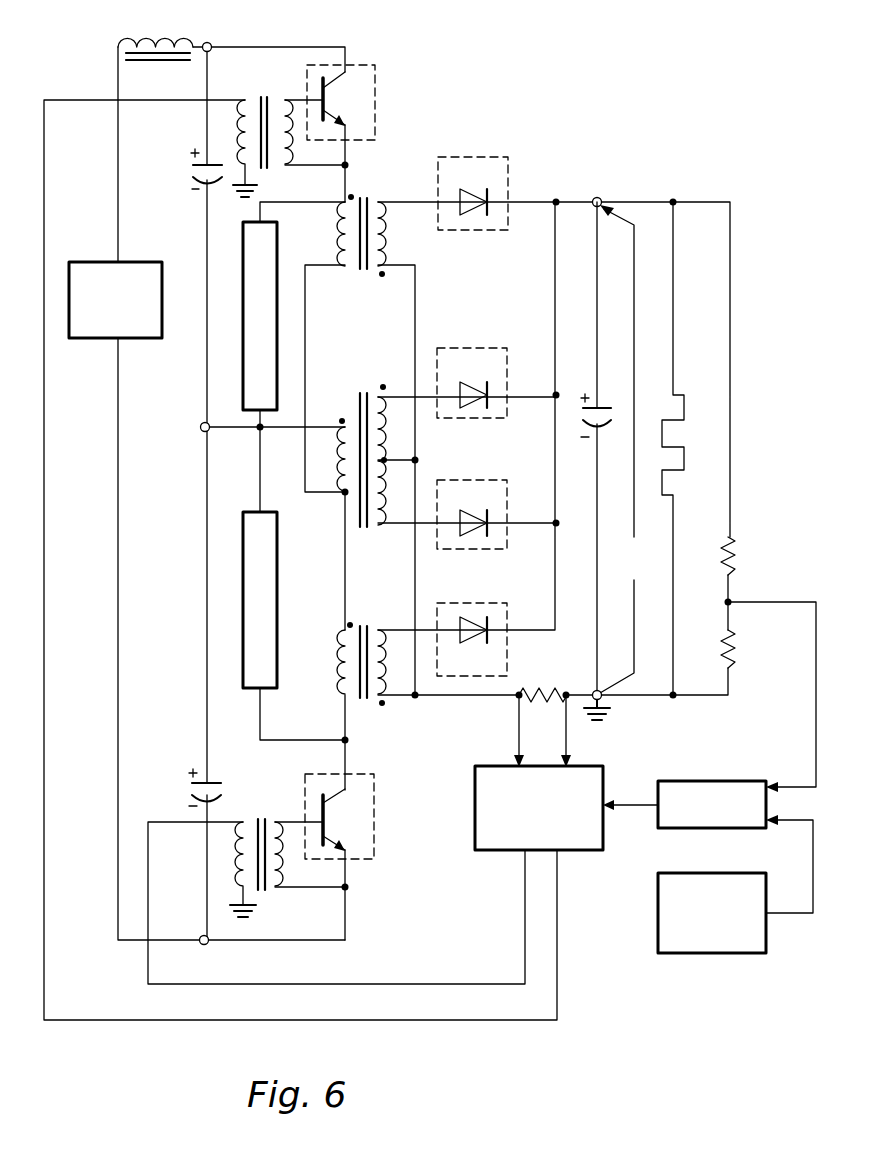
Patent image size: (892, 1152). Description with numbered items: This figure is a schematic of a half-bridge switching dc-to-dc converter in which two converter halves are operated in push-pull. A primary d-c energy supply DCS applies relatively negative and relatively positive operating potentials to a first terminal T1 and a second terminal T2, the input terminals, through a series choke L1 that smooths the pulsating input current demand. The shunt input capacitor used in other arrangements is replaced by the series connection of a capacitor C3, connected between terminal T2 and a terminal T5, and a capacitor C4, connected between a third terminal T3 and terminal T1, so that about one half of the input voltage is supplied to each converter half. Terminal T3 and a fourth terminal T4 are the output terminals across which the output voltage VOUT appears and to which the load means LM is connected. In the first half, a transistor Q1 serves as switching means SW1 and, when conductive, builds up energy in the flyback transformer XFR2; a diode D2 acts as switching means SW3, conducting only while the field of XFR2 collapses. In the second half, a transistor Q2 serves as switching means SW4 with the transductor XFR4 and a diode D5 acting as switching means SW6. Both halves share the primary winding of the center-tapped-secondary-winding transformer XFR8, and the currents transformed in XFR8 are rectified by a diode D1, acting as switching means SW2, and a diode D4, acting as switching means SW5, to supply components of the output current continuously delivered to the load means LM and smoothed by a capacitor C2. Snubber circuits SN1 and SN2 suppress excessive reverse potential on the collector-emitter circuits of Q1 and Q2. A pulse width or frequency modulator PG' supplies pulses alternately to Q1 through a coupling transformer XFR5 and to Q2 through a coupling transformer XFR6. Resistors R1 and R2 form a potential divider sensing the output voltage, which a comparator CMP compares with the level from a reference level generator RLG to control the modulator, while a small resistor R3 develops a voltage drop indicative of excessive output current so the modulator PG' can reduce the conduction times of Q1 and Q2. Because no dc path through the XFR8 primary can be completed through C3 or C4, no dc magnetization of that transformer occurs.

The series choke L1 is at (158, 46).
The second terminal T2 is at (208, 46).
The coupling transformer XFR5 is at (263, 132).
The transistor Q1 is at (360, 109).
The switching means SW1 is at (363, 102).
The capacitor C3 is at (188, 169).
The snubber circuit SN1 is at (243, 219).
The flyback transformer XFR2 is at (333, 244).
The diode D2 is at (465, 193).
The third switching means SW3 is at (487, 208).
The fourth terminal T4 is at (600, 200).
The primary d-c energy supply DCS is at (127, 259).
The terminal T5 is at (202, 422).
The snubber circuit SN2 is at (246, 510).
The center-tapped-secondary-winding transformer XFR8 is at (335, 534).
The diode D1 is at (467, 383).
The switching means SW2 is at (487, 396).
The diode D4 is at (467, 511).
The switching means SW5 is at (489, 525).
The transductor XFR4 is at (335, 680).
The diode D5 is at (470, 654).
The switching means SW6 is at (492, 643).
The capacitor C2 is at (601, 404).
The output voltage VOUT is at (628, 449).
The load means LM is at (684, 435).
The resistor R1 is at (735, 558).
The resistor R2 is at (735, 657).
The resistor R3 is at (551, 687).
The third terminal T3 is at (608, 712).
The pulse width or frequency modulator PG' is at (534, 794).
The comparator CMP is at (725, 780).
The reference level generator RLG is at (658, 874).
The capacitor C4 is at (186, 787).
The coupling transformer XFR6 is at (256, 852).
The transistor Q2 is at (358, 834).
The switching means SW4 is at (362, 816).
The first terminal T1 is at (208, 946).